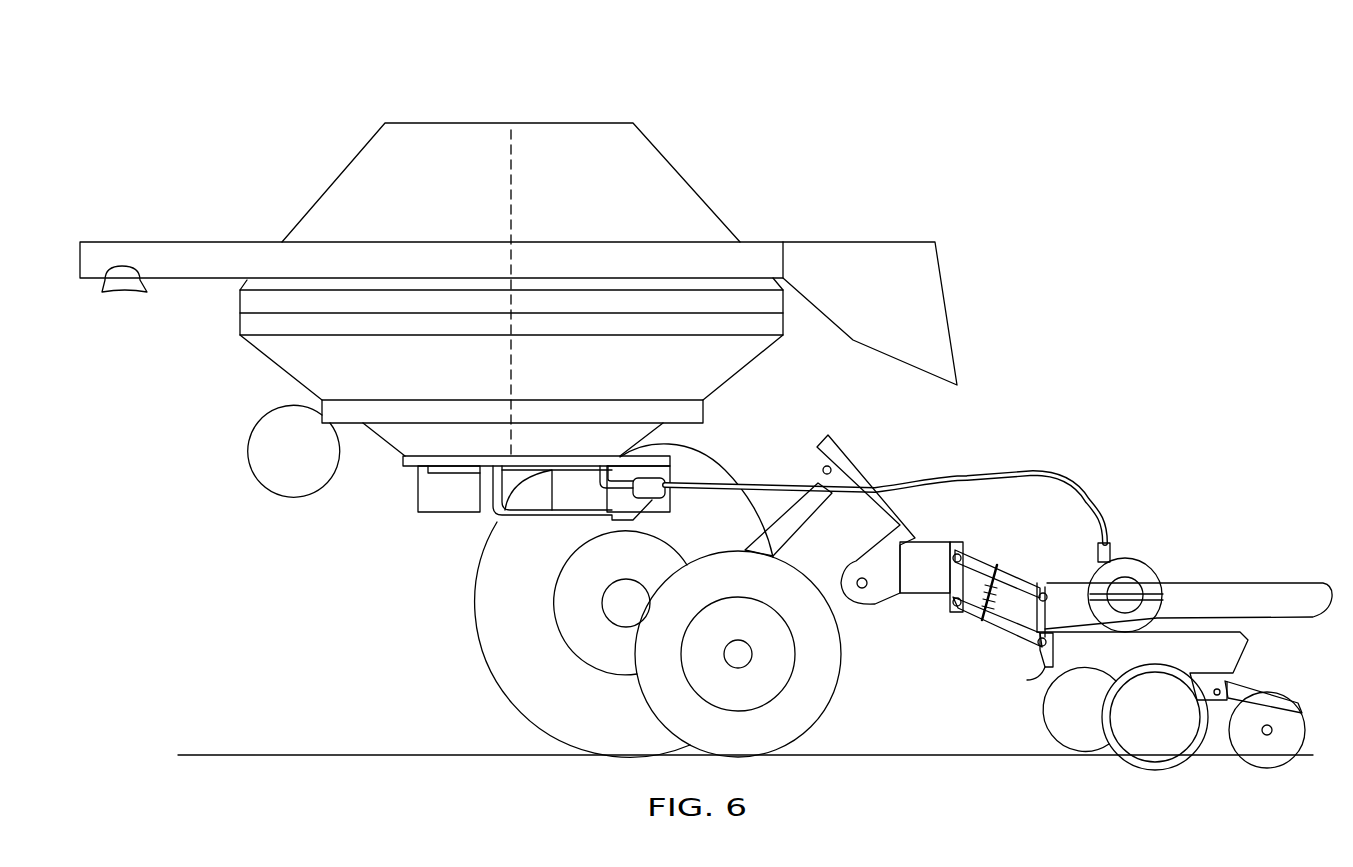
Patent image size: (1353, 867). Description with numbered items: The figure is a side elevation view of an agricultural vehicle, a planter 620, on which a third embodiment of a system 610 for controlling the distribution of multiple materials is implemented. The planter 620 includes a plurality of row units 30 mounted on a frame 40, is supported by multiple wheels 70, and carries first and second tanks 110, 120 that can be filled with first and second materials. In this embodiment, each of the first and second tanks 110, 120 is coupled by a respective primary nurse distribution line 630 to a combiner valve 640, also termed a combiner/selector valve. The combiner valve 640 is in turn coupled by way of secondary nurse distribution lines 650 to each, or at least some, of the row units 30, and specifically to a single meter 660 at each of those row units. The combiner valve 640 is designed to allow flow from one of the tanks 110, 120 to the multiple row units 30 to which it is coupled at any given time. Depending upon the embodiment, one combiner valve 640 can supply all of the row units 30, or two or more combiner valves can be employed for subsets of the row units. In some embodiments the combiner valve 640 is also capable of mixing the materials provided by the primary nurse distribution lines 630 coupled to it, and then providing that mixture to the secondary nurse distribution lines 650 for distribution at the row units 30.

The row unit 30 is at (1310, 578).
The frame 40 is at (927, 585).
The wheel 70 is at (822, 695).
The first tank 110 is at (410, 117).
The second tank 120 is at (610, 117).
The system 610 is at (1158, 202).
The planter 620 is at (295, 168).
The primary nurse distribution line 630 is at (613, 487).
The combiner valve 640 is at (652, 477).
The secondary nurse distribution line 650 is at (775, 485).
The meter 660 is at (1138, 567).